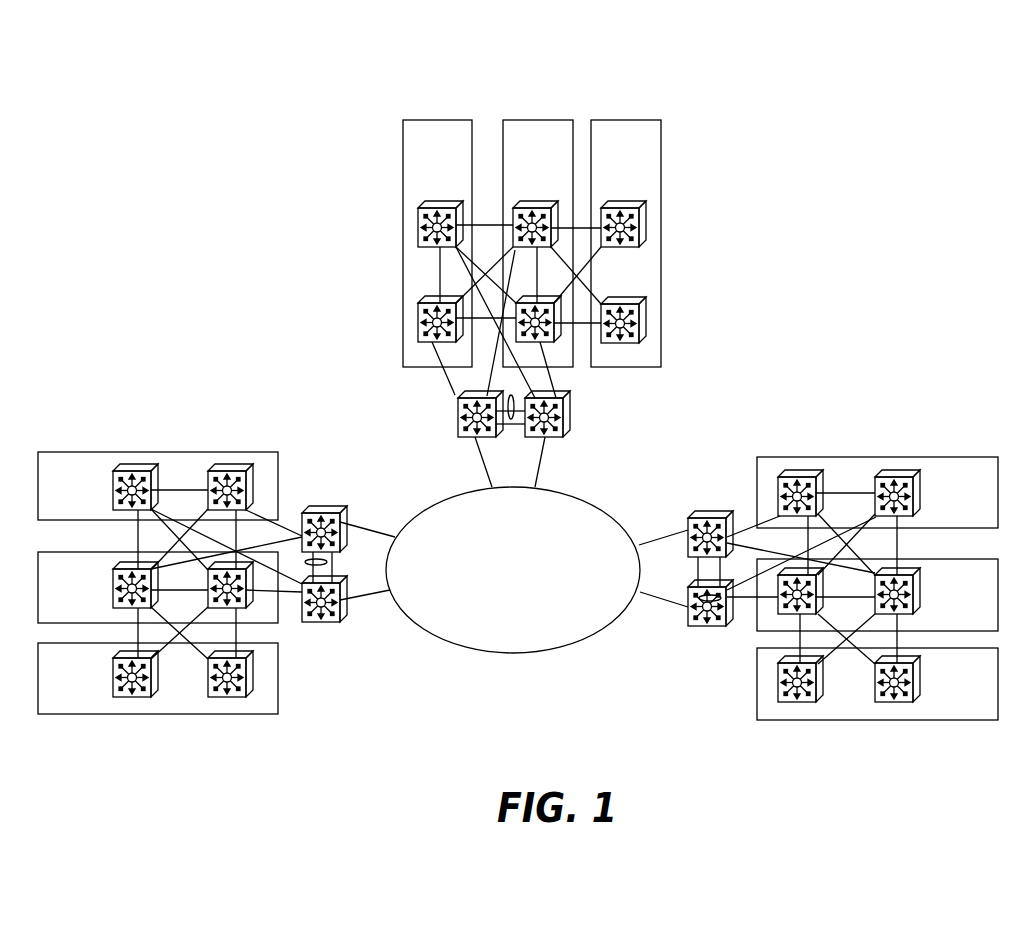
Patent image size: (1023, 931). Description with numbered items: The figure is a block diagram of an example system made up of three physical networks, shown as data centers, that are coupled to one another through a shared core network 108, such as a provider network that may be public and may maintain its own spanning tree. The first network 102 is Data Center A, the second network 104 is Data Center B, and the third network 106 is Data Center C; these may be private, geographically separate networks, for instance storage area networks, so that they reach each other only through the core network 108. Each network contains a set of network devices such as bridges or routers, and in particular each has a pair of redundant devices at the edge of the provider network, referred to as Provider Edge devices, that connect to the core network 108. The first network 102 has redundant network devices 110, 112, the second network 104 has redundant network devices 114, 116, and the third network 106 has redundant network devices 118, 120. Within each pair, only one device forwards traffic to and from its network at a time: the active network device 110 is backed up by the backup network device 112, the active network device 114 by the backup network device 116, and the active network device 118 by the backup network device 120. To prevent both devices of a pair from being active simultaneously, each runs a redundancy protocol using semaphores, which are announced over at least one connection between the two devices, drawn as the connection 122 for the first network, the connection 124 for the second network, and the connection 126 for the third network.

The first network 102 is at (152, 415).
The second network 104 is at (642, 76).
The third network 106 is at (892, 416).
The core network 108 is at (598, 505).
The active network device 110 is at (324, 507).
The backup network device 112 is at (320, 623).
The active network device 114 is at (563, 414).
The backup network device 116 is at (458, 413).
The active network device 118 is at (700, 628).
The backup network device 120 is at (708, 518).
The connection between redundant network devices 122 is at (337, 577).
The connection between redundant network devices 124 is at (516, 430).
The connection between redundant network devices 126 is at (693, 570).